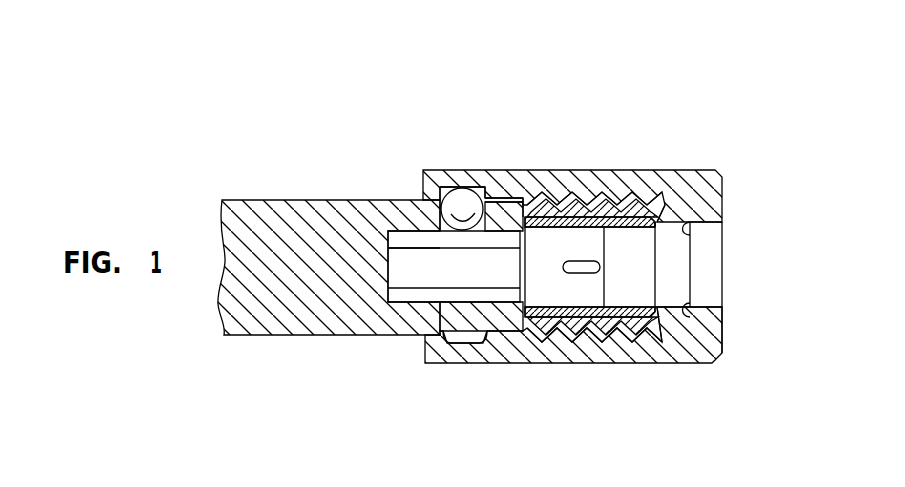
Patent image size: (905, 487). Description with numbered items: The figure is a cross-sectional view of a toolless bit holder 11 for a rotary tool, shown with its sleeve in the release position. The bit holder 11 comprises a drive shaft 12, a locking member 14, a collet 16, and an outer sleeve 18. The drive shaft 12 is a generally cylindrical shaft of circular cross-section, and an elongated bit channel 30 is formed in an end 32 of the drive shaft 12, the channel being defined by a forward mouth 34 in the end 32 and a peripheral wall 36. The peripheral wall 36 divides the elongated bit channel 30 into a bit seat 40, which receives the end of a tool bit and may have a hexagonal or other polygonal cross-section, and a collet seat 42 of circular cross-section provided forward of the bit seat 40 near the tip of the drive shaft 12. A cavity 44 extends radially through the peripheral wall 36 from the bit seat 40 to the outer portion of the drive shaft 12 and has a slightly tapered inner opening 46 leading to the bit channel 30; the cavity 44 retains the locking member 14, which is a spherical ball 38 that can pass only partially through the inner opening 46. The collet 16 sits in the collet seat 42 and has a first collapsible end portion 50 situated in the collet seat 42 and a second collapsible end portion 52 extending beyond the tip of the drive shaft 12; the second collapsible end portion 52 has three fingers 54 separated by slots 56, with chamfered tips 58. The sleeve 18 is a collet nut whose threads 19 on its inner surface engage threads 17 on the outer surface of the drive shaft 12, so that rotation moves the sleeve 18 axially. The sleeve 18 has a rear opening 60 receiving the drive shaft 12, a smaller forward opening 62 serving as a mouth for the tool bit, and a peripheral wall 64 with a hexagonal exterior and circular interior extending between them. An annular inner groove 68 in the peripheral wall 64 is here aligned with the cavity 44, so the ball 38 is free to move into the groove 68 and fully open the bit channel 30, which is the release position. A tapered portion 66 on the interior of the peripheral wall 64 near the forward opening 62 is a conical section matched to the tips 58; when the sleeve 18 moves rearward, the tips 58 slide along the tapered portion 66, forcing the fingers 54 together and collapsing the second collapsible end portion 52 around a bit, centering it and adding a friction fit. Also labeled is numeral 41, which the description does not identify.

The bit holder 11 is at (368, 112).
The drive shaft 12 is at (282, 218).
The locking member 14 is at (453, 205).
The collet 16 is at (629, 190).
The threads 17 is at (625, 188).
The outer sleeve 18 is at (572, 172).
The threads 19 is at (655, 335).
The elongated bit channel 30 is at (490, 268).
The end 32 is at (500, 324).
The forward mouth 34 is at (626, 267).
The peripheral wall 36 is at (508, 198).
The ball 38 is at (479, 190).
The bit seat 40 is at (404, 298).
The tube bore 41 is at (390, 268).
The collet seat 42 is at (592, 332).
The cavity 44 is at (418, 198).
The inner opening 46 is at (478, 232).
The first collapsible end portion 50 is at (550, 193).
The second collapsible end portion 52 is at (672, 222).
The fingers 54 is at (648, 308).
The slots 56 is at (598, 225).
The tips 58 is at (663, 172).
The rear opening 60 is at (417, 340).
The forward opening 62 is at (711, 290).
The peripheral wall 64 is at (639, 352).
The tapered portion 66 is at (716, 233).
The annular inner groove 68 is at (473, 342).